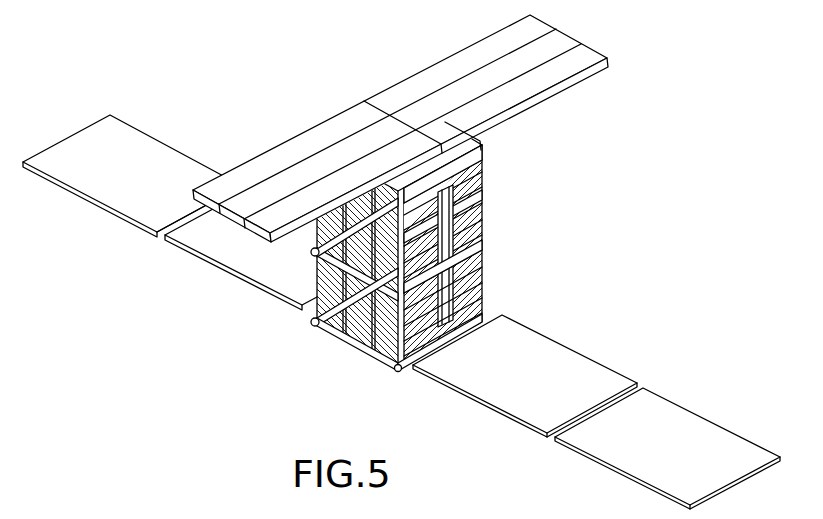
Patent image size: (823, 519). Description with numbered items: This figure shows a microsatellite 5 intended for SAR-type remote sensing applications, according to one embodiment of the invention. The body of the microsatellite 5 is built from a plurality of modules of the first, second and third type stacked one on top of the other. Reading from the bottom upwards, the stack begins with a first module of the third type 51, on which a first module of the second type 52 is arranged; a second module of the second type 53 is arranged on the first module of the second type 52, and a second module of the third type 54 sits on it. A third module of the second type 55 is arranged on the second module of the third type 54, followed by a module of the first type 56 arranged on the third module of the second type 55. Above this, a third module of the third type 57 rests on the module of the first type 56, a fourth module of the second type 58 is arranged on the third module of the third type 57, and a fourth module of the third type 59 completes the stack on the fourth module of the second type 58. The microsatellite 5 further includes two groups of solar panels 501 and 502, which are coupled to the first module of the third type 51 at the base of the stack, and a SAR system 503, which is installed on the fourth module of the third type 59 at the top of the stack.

The microsatellite 5 is at (657, 116).
The first module of the third type 51 is at (377, 344).
The first module of the second type 52 is at (483, 307).
The second module of the second type 53 is at (483, 278).
The second module of the third type 54 is at (483, 258).
The third module of the second type 55 is at (483, 230).
The module of the first type 56 is at (483, 212).
The third module of the third type 57 is at (483, 190).
The fourth module of the second type 58 is at (483, 172).
The fourth module of the third type 59 is at (483, 155).
The group of solar panels 501 is at (533, 445).
The group of solar panels 502 is at (125, 238).
The SAR system 503 is at (364, 80).